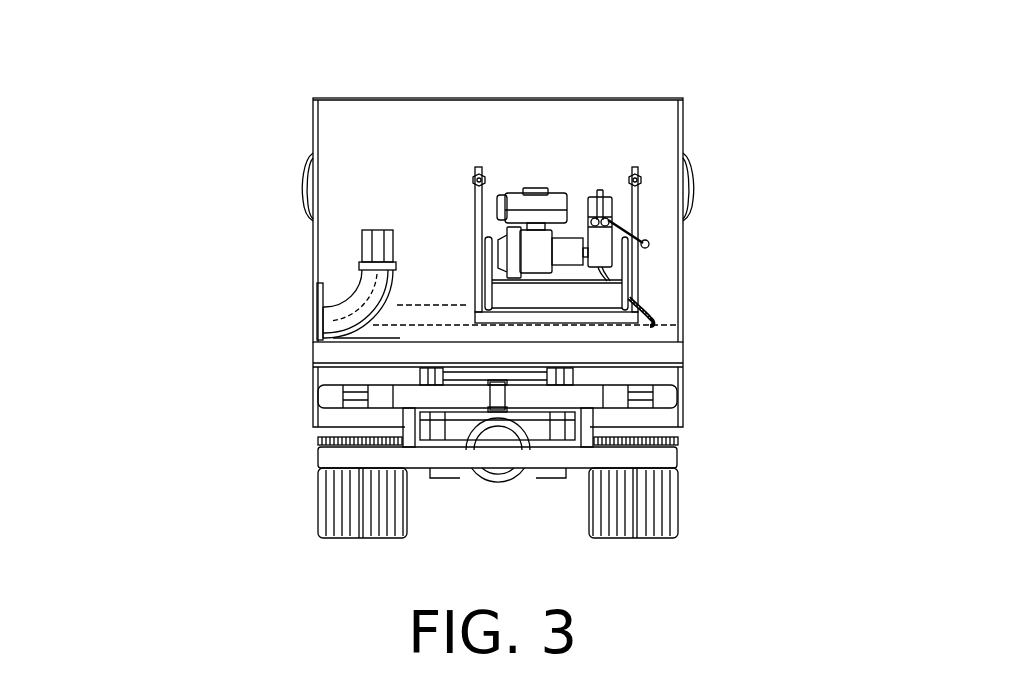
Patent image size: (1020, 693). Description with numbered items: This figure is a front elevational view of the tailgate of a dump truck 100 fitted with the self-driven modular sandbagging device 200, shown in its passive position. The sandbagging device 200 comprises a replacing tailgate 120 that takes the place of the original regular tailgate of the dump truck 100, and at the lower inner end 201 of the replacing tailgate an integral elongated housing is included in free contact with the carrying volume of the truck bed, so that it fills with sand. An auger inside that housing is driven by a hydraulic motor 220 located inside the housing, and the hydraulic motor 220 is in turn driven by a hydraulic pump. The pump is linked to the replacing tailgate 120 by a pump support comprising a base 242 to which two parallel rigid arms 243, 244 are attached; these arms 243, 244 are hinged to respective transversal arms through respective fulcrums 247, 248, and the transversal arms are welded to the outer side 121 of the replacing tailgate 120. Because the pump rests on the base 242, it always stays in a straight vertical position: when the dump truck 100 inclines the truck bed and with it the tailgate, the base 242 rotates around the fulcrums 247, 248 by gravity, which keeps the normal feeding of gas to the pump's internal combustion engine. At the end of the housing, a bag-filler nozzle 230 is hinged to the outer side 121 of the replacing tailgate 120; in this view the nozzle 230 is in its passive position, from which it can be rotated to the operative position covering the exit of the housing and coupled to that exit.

The dump truck 100 is at (278, 90).
The replacing tailgate 120 is at (355, 155).
The outer side of the replacing tailgate 121 is at (418, 157).
The self-driven modular sandbagging device 200 is at (397, 332).
The lower inner end of the replacing tailgate 201 is at (527, 360).
The hydraulic motor 220 is at (672, 313).
The bag-filler nozzle 230 is at (353, 292).
The base 242 is at (610, 317).
The rigid arm 243 is at (637, 212).
The rigid arm 244 is at (475, 213).
The fulcrum 247 is at (633, 180).
The fulcrum 248 is at (483, 180).